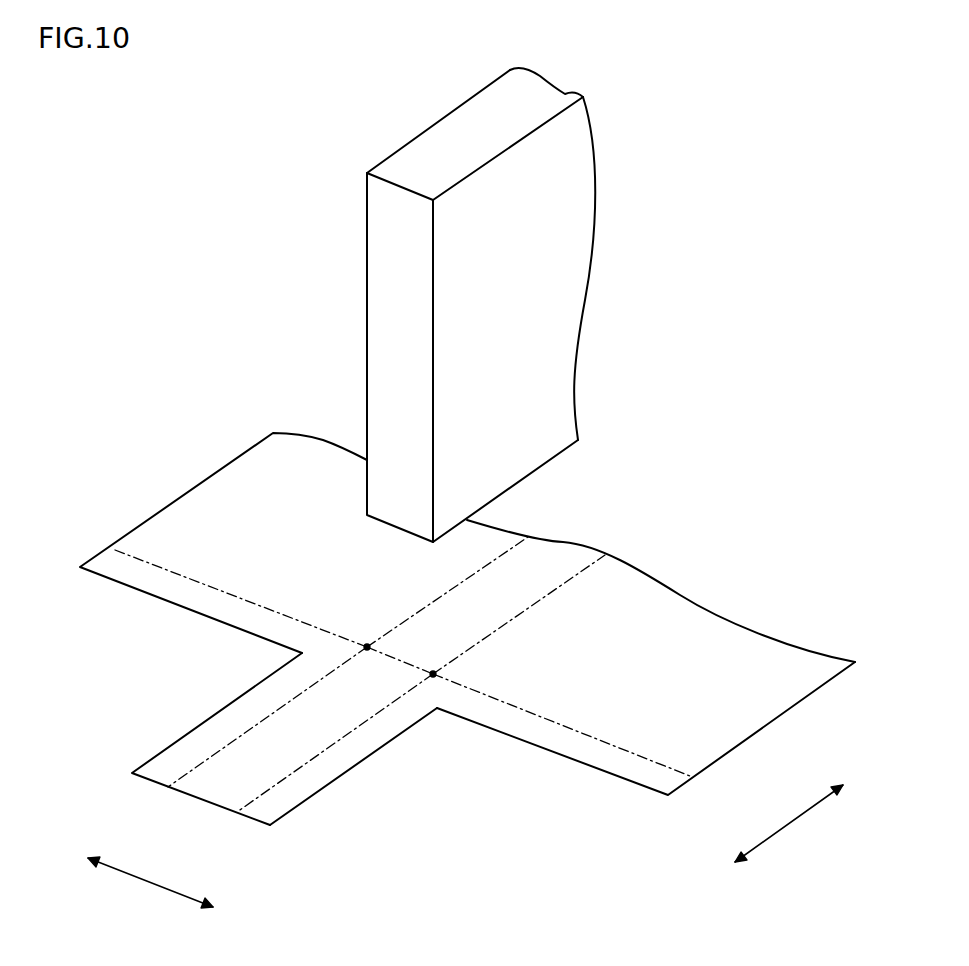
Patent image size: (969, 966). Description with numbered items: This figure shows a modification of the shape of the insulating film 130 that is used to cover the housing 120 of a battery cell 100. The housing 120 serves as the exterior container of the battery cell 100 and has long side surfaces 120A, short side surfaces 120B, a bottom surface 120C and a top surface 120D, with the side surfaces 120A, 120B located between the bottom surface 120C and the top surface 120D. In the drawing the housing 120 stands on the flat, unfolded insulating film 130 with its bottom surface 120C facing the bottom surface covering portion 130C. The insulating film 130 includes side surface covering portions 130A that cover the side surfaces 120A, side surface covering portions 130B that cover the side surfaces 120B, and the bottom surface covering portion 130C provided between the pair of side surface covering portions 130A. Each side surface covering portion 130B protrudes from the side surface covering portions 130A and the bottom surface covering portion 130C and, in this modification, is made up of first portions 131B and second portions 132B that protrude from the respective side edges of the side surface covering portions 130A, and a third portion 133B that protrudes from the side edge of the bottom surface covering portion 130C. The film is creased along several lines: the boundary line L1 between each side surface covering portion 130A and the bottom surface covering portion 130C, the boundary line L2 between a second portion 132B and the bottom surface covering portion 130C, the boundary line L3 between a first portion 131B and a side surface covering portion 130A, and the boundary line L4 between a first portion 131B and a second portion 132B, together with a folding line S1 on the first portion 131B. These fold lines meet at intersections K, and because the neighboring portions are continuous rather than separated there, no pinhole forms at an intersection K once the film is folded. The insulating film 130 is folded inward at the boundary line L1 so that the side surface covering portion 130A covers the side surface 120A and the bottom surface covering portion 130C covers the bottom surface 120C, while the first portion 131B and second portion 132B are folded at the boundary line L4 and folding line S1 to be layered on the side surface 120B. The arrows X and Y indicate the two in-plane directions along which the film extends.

The battery cell 100 is at (372, 123).
The housing 120 is at (560, 192).
The side surface 120A is at (543, 302).
The side surface 120B is at (395, 332).
The bottom surface 120C is at (570, 448).
The top surface 120D is at (450, 137).
The insulating film 130 is at (758, 578).
The side surface covering portion 130A is at (203, 507).
The side surface covering portion 130B is at (280, 902).
The bottom surface covering portion 130C is at (550, 562).
The first portion 131B is at (507, 745).
The second portion 132B is at (322, 772).
The third portion 133B is at (243, 782).
The boundary line L1 is at (492, 558).
The boundary line L2 is at (393, 658).
The boundary line L3 is at (188, 578).
The boundary line L4 is at (207, 757).
The intersection K is at (367, 647).
The folding line S1 is at (330, 653).
The X direction X is at (788, 825).
The Y direction Y is at (150, 887).